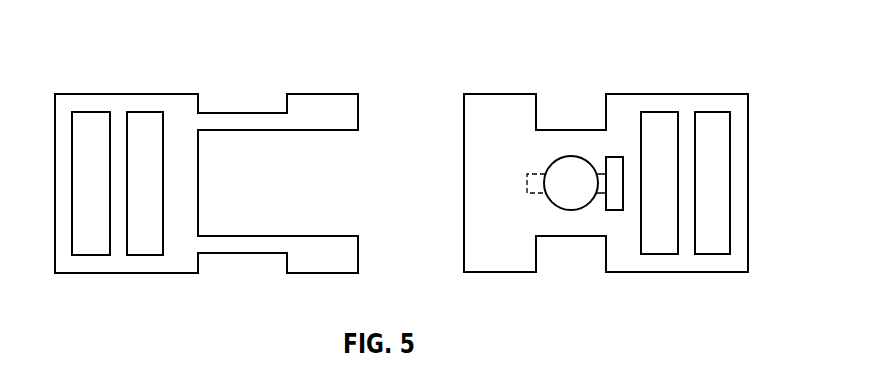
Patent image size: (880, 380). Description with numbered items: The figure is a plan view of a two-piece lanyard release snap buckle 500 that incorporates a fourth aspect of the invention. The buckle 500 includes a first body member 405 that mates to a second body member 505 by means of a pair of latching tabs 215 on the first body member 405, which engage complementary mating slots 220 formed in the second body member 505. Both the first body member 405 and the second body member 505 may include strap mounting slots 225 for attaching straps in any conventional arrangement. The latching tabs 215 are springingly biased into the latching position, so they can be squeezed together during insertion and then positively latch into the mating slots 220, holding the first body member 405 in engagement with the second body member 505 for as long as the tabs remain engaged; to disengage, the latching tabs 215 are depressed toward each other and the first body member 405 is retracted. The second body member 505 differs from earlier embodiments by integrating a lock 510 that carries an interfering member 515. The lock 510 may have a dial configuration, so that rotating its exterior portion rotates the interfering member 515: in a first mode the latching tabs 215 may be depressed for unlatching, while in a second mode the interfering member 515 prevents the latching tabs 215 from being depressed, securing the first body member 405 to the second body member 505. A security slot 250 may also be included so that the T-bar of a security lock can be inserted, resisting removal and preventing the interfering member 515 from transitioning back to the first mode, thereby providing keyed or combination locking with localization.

The two-piece lanyard release snap buckle 500 is at (115, 58).
The first body member 405 is at (116, 94).
The latching tabs 215 is at (298, 94).
The strap mounting slots 225 is at (72, 184).
The second body member 505 is at (524, 94).
The mating slots 220 is at (569, 122).
The lock 510 is at (553, 164).
The interfering member 515 is at (527, 181).
The security slot 250 is at (614, 212).